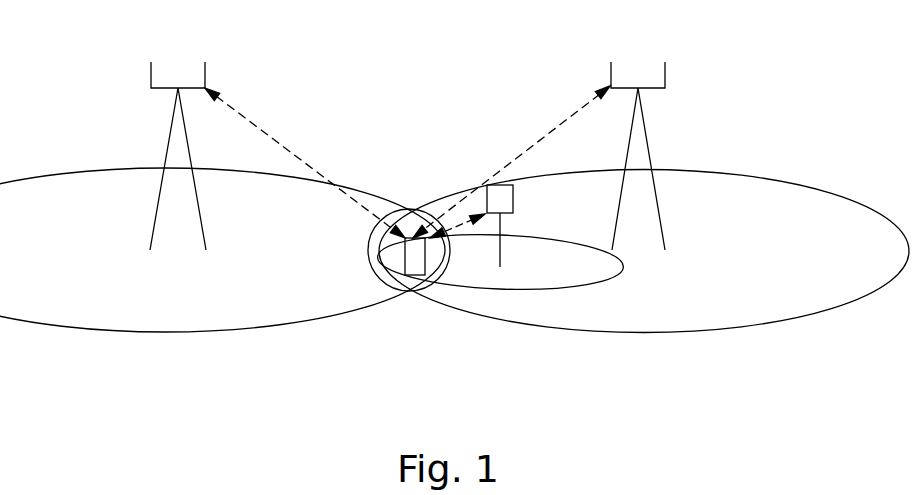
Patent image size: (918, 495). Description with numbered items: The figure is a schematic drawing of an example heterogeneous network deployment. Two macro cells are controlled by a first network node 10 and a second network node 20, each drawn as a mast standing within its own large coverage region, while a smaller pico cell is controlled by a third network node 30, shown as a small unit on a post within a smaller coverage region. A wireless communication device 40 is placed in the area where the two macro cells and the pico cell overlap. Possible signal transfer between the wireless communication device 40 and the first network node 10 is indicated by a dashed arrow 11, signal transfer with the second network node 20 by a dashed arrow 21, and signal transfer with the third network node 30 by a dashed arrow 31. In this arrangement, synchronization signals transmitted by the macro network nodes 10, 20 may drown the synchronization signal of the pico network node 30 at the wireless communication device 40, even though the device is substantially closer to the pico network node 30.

The first network node 10 is at (151, 80).
The dashed arrow 11 is at (283, 147).
The second network node 20 is at (610, 80).
The dashed arrow 21 is at (540, 137).
The third network node 30 is at (503, 215).
The dashed arrow 31 is at (468, 226).
The wireless communication device 40 is at (403, 283).